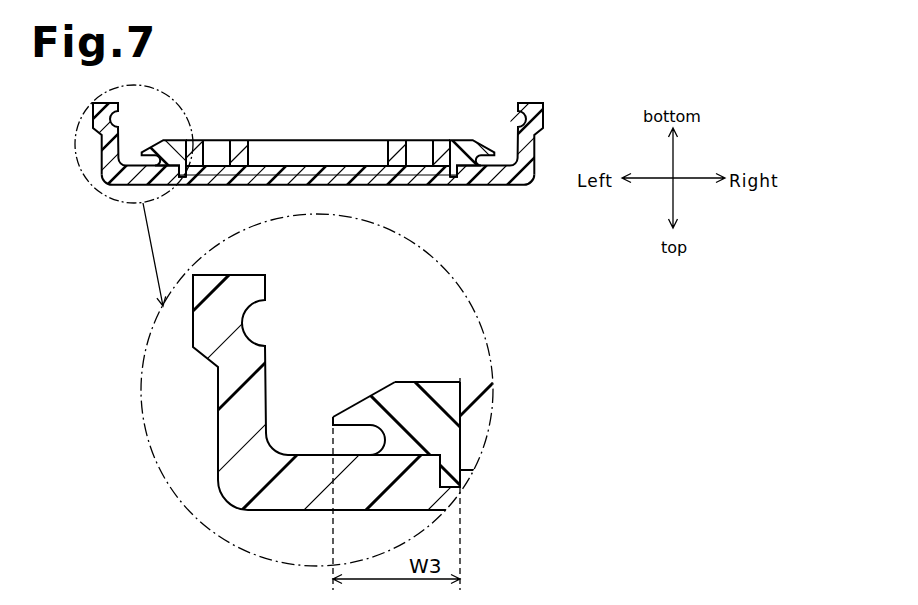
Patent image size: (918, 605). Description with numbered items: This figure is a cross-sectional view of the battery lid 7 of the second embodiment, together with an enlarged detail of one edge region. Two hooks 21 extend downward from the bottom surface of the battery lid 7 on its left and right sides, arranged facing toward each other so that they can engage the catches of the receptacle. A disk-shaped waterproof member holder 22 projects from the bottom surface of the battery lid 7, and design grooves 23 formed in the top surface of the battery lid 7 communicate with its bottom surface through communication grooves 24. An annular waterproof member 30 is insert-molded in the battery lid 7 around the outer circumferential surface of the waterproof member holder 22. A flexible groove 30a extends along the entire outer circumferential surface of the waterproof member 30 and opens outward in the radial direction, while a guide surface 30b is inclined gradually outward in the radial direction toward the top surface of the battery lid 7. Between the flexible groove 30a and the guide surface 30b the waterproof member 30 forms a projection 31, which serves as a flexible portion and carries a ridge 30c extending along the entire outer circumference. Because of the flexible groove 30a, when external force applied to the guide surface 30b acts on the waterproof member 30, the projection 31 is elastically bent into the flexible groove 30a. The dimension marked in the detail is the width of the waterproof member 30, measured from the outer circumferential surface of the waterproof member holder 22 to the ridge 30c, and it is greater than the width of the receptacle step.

The battery lid 7 is at (537, 93).
The hook 21 is at (92, 121).
The waterproof member holder 22 is at (457, 141).
The design groove 23 is at (392, 168).
The communication groove 24 is at (430, 172).
The waterproof member 30 is at (315, 300).
The flexible groove 30a is at (361, 432).
The guide surface 30b is at (373, 395).
The ridge 30c is at (333, 421).
The projection 31 is at (355, 413).